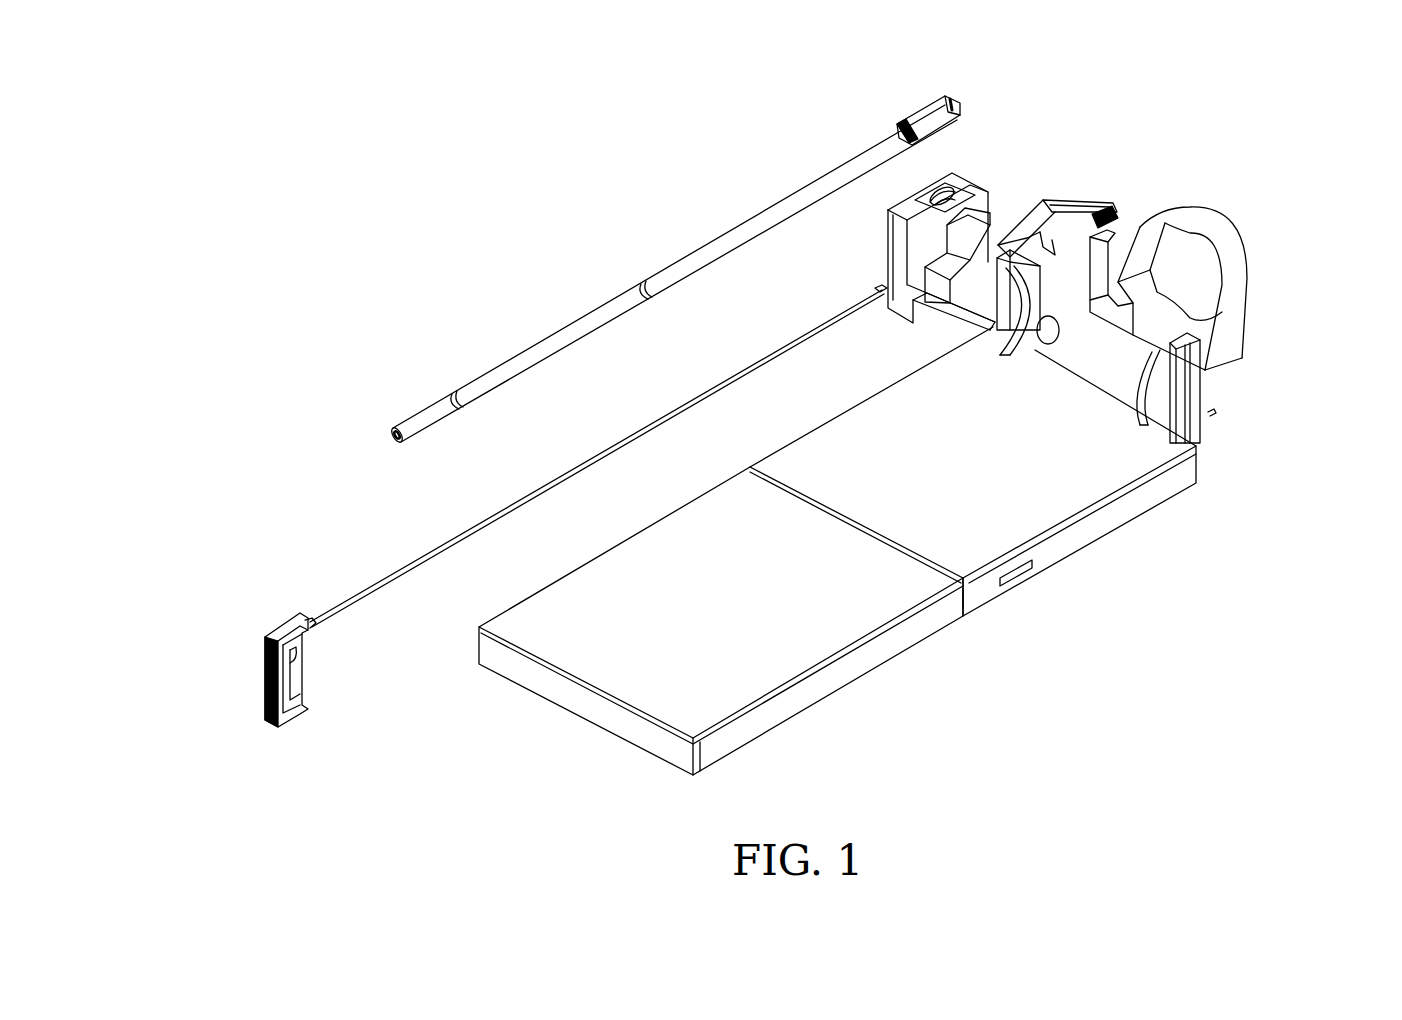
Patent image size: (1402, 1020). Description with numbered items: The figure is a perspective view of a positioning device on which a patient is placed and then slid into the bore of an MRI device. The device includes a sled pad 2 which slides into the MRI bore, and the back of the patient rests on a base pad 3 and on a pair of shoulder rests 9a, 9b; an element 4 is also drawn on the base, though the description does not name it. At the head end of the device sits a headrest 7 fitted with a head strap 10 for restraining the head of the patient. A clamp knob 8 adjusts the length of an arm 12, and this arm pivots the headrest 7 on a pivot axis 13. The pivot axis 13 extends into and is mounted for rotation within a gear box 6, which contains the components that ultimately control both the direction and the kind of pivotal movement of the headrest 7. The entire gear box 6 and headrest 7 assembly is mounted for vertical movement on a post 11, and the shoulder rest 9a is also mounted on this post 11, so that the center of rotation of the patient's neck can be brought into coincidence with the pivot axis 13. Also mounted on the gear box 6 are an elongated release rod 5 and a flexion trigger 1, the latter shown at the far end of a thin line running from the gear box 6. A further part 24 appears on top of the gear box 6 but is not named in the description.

The flexion trigger 1 is at (290, 718).
The sled pad 2 is at (558, 705).
The base pad 3 is at (1018, 470).
The side frame 4 is at (1110, 528).
The release rod 5 is at (433, 403).
The gear box 6 is at (888, 240).
The headrest 7 is at (1137, 200).
The clamp knob 8 is at (1107, 205).
The shoulder rest 9a is at (1025, 330).
The shoulder rest 9b is at (1200, 445).
The head strap 10 is at (1258, 270).
The post 11 is at (1040, 250).
The arm 12 is at (1025, 210).
The pivot axis 13 is at (958, 308).
The knob 24 is at (948, 186).